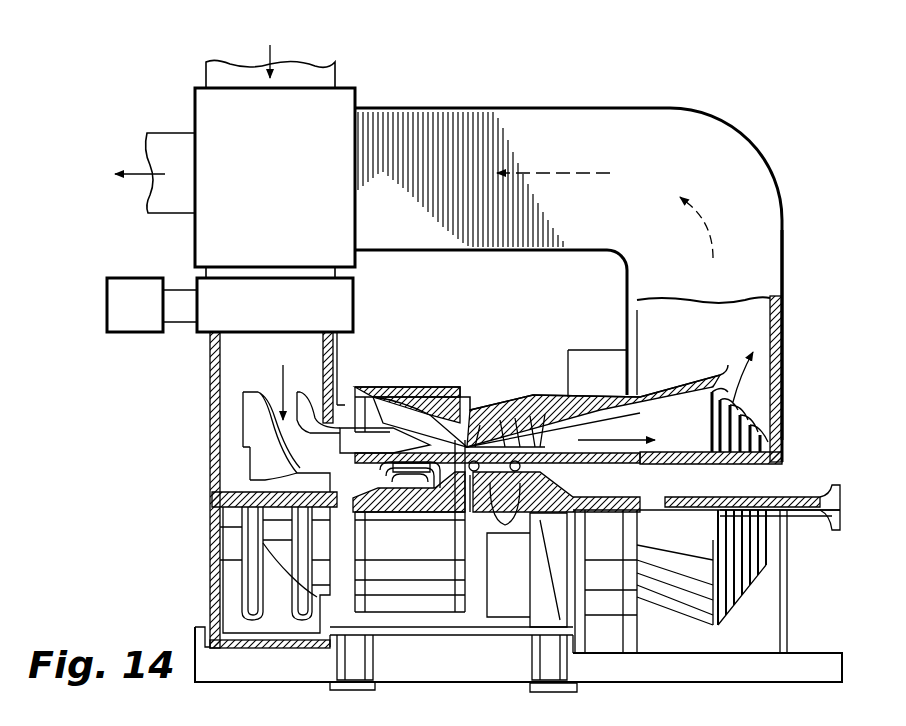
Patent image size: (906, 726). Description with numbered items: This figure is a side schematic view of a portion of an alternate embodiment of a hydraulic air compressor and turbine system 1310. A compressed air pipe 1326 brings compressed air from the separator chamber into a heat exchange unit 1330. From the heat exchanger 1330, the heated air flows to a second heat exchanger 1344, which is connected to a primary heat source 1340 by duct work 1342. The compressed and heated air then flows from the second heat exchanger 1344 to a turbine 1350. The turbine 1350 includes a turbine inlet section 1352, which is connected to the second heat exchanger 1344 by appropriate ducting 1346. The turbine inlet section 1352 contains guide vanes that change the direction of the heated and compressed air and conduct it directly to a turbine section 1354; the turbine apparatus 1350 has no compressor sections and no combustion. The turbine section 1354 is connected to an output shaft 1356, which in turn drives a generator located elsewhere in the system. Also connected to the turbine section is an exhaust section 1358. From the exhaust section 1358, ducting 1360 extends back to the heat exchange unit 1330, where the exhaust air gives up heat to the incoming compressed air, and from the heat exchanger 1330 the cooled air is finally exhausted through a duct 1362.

The hydraulic air compressor and turbine system 1310 is at (601, 96).
The compressed air pipe 1326 is at (345, 80).
The heat exchange unit 1330 is at (195, 96).
The primary heat source 1340 is at (107, 300).
The duct work 1342 is at (178, 322).
The second heat exchanger 1344 is at (355, 304).
The ducting 1346 is at (204, 375).
The turbine 1350 is at (490, 385).
The turbine inlet section 1352 is at (270, 402).
The turbine section 1354 is at (372, 383).
The output shaft 1356 is at (812, 490).
The exhaust section 1358 is at (650, 383).
The ducting 1360 is at (776, 200).
The duct 1362 is at (180, 213).